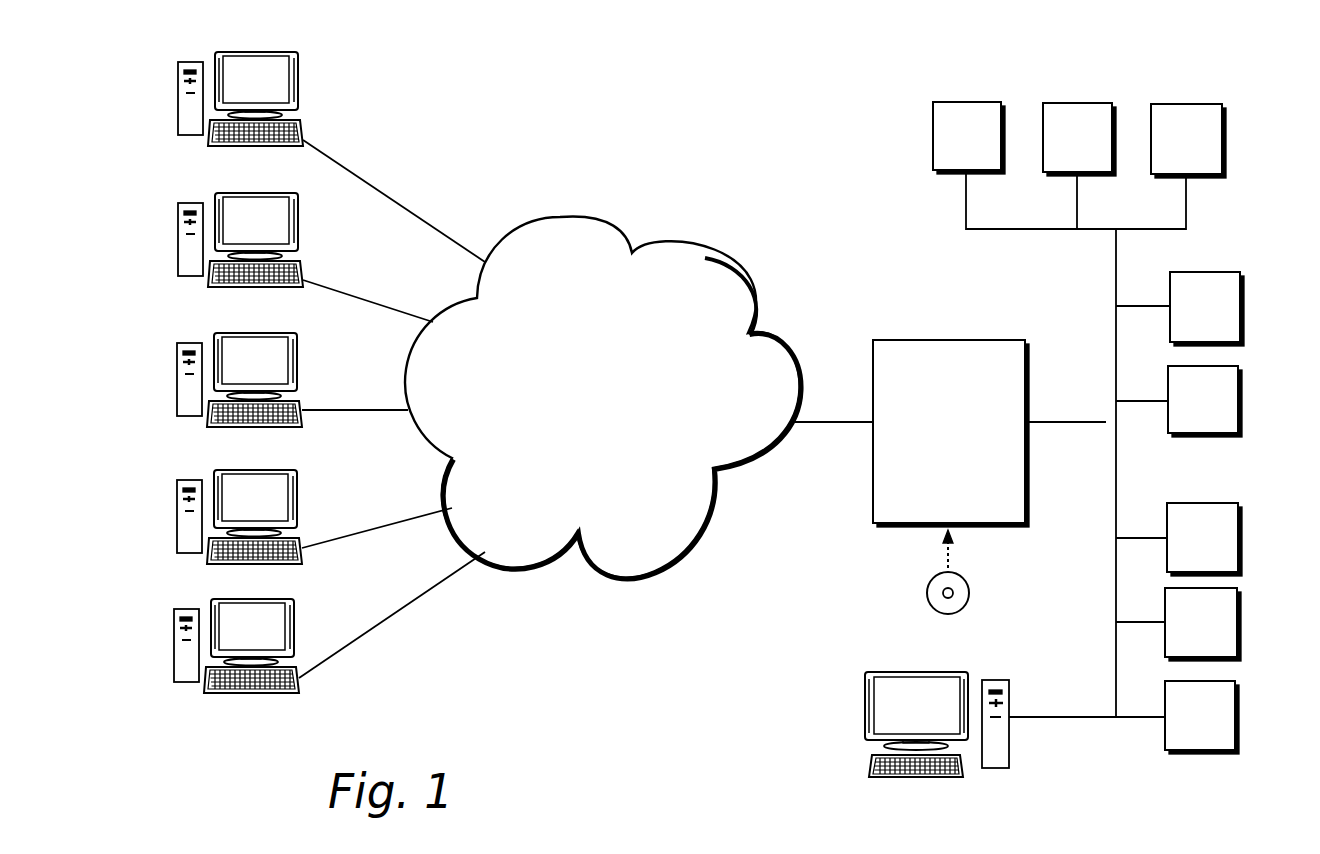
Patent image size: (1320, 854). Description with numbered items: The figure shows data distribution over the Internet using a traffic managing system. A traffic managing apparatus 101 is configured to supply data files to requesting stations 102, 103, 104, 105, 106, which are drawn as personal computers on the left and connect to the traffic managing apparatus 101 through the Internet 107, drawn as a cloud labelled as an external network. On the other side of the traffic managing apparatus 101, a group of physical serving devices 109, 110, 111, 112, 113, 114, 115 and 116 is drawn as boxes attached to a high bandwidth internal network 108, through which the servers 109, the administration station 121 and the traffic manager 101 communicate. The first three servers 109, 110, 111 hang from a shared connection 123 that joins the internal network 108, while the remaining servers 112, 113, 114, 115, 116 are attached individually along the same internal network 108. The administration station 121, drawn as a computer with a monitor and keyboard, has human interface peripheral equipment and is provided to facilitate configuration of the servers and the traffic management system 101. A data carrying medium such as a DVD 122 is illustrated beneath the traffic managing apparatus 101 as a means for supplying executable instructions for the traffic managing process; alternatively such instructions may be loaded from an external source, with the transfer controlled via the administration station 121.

The traffic managing apparatus 101 is at (942, 355).
The requesting station 102 is at (278, 85).
The requesting station 103 is at (277, 232).
The requesting station 104 is at (275, 362).
The requesting station 105 is at (275, 499).
The requesting station 106 is at (273, 630).
The Internet 107 is at (611, 436).
The high bandwidth internal network 108 is at (1117, 275).
The physical serving device 109 is at (988, 152).
The physical serving device 110 is at (1098, 153).
The physical serving device 111 is at (1208, 154).
The physical serving device 112 is at (1226, 322).
The physical serving device 113 is at (1224, 416).
The physical serving device 114 is at (1224, 553).
The physical serving device 115 is at (1222, 638).
The physical serving device 116 is at (1221, 731).
The administration station 121 is at (893, 680).
The DVD 122 is at (961, 592).
The server network connection 123 is at (1017, 229).